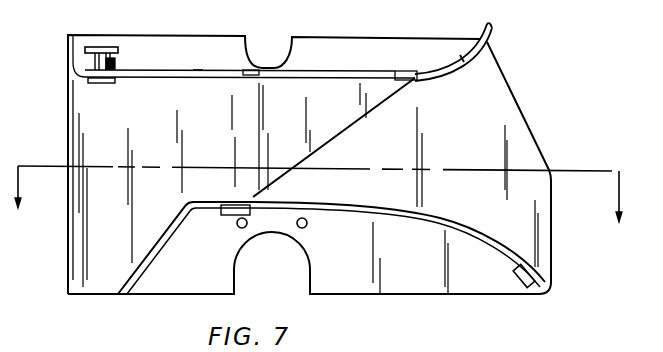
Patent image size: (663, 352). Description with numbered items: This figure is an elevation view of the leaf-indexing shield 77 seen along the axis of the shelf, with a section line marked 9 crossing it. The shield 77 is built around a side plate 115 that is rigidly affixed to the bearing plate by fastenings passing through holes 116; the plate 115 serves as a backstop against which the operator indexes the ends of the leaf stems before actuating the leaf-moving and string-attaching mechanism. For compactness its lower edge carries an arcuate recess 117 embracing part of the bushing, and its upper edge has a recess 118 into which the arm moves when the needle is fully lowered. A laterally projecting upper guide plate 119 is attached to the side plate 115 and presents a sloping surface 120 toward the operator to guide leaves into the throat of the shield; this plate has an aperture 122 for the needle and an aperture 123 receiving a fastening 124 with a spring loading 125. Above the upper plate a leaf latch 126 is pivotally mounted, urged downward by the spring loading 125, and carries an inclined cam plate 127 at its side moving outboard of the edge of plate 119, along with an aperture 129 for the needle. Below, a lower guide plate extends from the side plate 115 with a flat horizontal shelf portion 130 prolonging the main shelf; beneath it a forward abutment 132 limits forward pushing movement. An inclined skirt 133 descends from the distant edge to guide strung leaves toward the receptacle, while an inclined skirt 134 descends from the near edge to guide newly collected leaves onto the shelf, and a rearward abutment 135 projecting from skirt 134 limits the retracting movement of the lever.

The leaf-indexing shield 77 is at (520, 52).
The side plate 115 is at (488, 155).
The holes 116 is at (297, 223).
The arcuate recess 117 is at (240, 246).
The recess 118 is at (291, 50).
The upper guide plate 119 is at (183, 78).
The sloping surface 120 is at (465, 67).
The aperture 122 is at (310, 78).
The aperture 123 is at (115, 70).
The fastening 124 is at (98, 84).
The spring loading 125 is at (113, 46).
The leaf latch 126 is at (203, 62).
The inclined cam plate 127 is at (354, 119).
The aperture 129 is at (256, 69).
The shelf portion 130 is at (310, 202).
The forward abutment 132 is at (221, 215).
The inclined skirt 133 is at (152, 263).
The inclined skirt 134 is at (485, 238).
The rearward abutment 135 is at (515, 278).
The section line 9- 9 is at (318, 205).